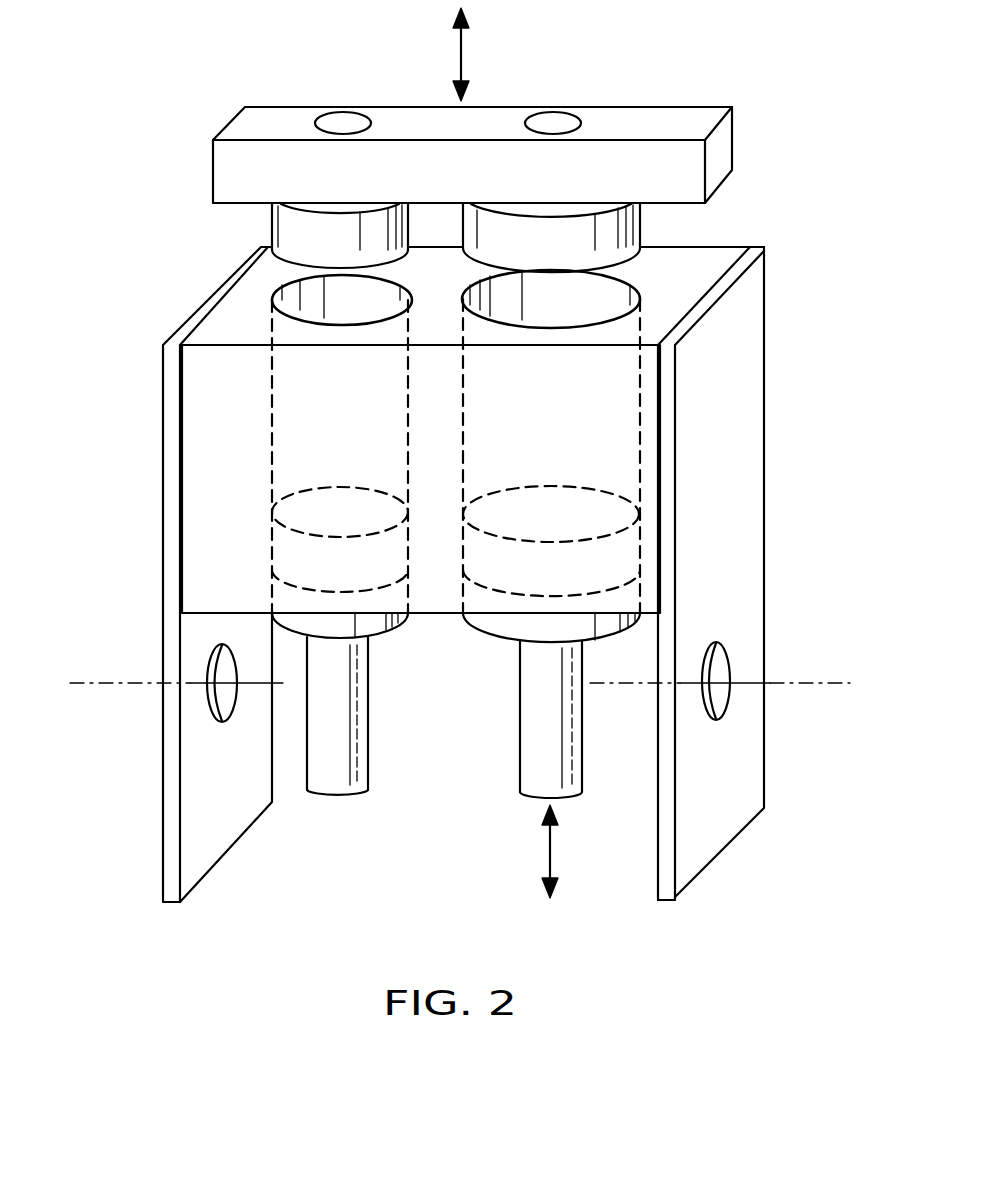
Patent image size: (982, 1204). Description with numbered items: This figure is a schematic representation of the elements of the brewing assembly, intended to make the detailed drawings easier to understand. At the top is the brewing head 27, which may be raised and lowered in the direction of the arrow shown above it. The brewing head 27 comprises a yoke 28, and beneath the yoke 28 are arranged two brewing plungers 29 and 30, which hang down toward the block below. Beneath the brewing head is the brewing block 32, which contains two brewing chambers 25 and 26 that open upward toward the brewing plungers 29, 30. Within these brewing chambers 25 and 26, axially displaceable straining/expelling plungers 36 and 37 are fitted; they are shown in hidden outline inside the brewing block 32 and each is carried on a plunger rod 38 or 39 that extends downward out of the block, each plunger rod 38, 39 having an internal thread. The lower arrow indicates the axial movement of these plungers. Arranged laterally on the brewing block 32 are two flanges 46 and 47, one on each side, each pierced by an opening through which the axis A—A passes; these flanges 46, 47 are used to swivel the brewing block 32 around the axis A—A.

The brewing head 27 is at (760, 159).
The yoke 28 is at (622, 125).
The brewing plunger 29 is at (612, 232).
The brewing plunger 30 is at (302, 228).
The brewing chamber 25 is at (647, 292).
The brewing chamber 26 is at (272, 296).
The brewing block 32 is at (206, 430).
The straining/expelling plunger 36 is at (555, 512).
The straining/expelling plunger 37 is at (333, 500).
The plunger rod 38 is at (540, 752).
The plunger rod 39 is at (345, 748).
The flange 46 is at (722, 787).
The flange 47 is at (215, 795).